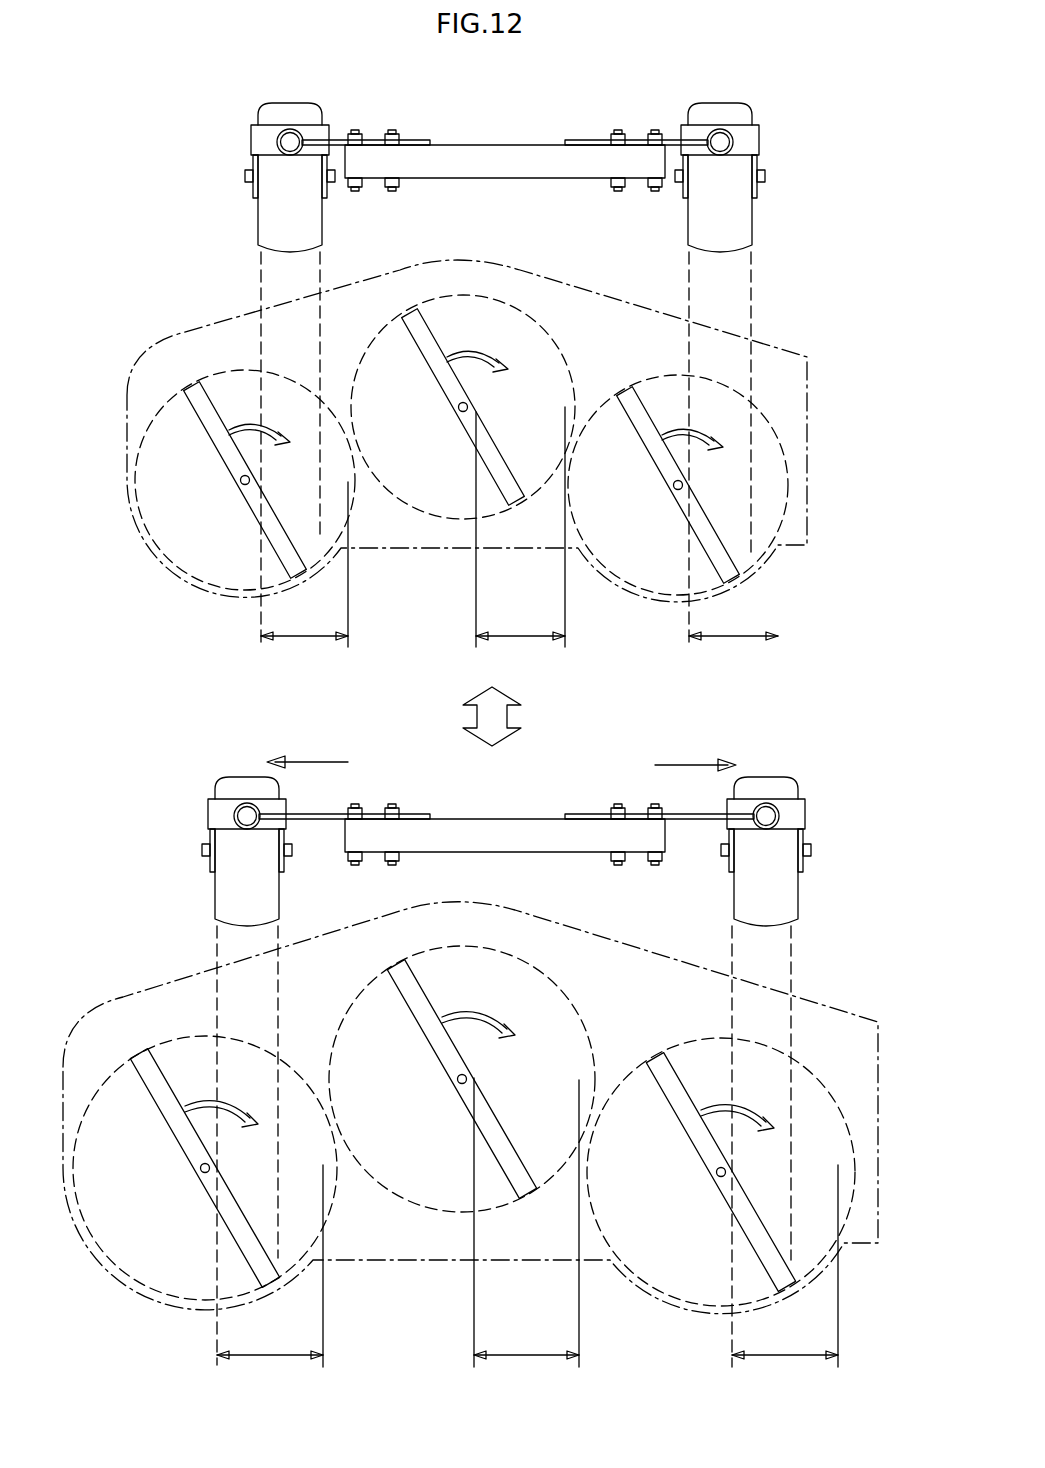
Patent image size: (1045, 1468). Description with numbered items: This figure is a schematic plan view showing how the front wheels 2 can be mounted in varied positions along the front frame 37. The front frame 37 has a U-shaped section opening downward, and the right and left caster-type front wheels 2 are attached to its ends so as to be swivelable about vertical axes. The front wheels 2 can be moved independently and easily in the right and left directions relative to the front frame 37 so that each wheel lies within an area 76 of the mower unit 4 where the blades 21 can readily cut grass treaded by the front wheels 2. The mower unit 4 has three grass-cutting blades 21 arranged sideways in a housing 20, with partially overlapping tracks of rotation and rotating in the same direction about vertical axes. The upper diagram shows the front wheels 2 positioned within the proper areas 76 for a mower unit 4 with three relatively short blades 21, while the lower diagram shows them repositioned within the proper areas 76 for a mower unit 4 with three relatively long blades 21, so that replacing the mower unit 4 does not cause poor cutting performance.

The front wheels 2 is at (268, 226).
The mower unit 4 is at (178, 330).
The housing 20 is at (552, 277).
The grass-cutting blades 21 is at (208, 412).
The front frame 37 is at (505, 143).
The areas 76 is at (527, 887).